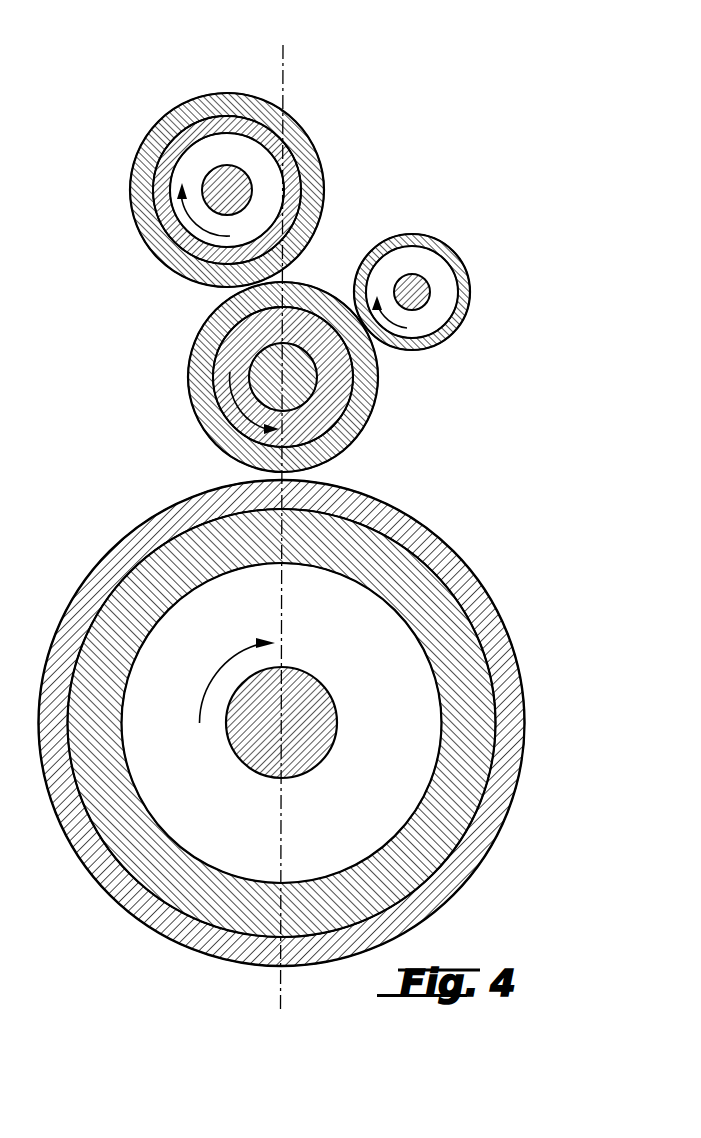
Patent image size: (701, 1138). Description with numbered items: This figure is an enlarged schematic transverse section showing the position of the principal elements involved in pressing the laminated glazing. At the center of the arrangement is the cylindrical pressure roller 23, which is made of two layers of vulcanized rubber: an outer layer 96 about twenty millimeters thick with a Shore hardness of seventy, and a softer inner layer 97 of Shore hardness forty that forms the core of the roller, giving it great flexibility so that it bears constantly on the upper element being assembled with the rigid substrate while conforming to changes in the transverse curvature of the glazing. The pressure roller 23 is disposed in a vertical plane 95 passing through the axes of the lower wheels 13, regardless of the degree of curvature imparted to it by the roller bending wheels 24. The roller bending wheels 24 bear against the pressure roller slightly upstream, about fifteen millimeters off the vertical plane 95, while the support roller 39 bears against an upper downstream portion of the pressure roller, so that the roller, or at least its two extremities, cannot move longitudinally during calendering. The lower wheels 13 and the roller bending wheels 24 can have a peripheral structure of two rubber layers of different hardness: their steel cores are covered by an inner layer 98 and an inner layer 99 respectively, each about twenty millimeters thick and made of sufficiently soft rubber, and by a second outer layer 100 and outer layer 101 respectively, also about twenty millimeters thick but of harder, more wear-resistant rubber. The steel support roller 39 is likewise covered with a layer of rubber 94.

The lower wheels 13 is at (305, 723).
The outer layer of lower wheel 100 is at (495, 632).
The inner layer of lower wheel 98 is at (477, 682).
The pressure roller 23 is at (296, 377).
The outer layer of pressure roller 96 is at (200, 398).
The inner layer of pressure roller 97 is at (232, 353).
The roller bending wheels 24 is at (246, 190).
The outer layer of roller bending wheel 101 is at (157, 137).
The inner layer of roller bending wheel 99 is at (163, 210).
The support roller 39 is at (440, 291).
The layer of rubber 94 is at (460, 298).
The vertical plane 95 is at (288, 62).